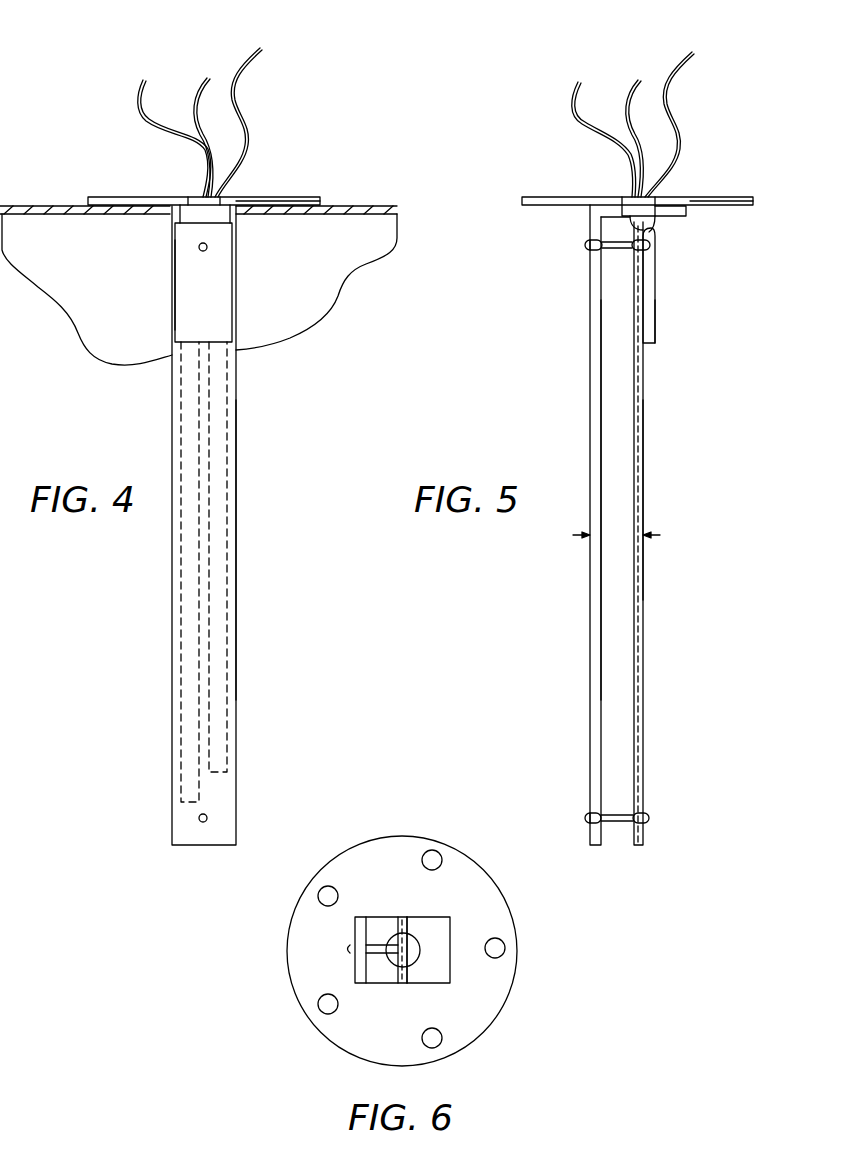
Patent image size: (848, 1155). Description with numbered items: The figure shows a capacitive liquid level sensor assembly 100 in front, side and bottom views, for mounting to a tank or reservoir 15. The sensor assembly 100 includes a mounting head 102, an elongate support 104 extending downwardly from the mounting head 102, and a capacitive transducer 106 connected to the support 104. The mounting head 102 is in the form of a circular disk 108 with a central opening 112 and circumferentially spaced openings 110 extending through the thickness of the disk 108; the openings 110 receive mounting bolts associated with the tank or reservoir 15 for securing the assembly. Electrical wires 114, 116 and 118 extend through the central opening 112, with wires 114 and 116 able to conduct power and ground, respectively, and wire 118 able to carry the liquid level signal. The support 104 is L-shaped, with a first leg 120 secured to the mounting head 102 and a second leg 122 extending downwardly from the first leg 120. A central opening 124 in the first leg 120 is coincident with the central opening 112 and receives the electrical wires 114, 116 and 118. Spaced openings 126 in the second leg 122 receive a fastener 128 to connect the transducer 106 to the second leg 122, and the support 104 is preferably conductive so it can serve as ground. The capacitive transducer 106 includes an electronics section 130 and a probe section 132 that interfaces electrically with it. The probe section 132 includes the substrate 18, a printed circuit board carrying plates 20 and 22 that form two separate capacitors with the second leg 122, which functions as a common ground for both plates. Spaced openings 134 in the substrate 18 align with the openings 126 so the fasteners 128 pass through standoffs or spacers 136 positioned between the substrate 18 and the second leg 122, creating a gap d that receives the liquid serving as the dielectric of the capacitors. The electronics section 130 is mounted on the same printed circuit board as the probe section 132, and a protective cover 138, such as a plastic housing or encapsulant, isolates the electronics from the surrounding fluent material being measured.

In FIG. 4, the tank or reservoir 15 is at (347, 206).
In FIG. 4, the substrate 18 is at (237, 524).
In FIG. 5, the substrate 18 is at (644, 490).
In FIG. 4, the plate 20 is at (222, 624).
In FIG. 4, the plate 22 is at (190, 723).
In FIG. 4, the capacitive liquid level sensor assembly 100 is at (312, 170).
In FIG. 5, the capacitive liquid level sensor assembly 100 is at (748, 170).
In FIG. 6, the capacitive liquid level sensor assembly 100 is at (585, 975).
In FIG. 4, the mounting head 102 is at (267, 203).
In FIG. 5, the mounting head 102 is at (694, 198).
In FIG. 5, the elongate support 104 is at (590, 350).
In FIG. 4, the capacitive transducer 106 is at (238, 440).
In FIG. 5, the capacitive transducer 106 is at (645, 436).
In FIG. 4, the circular disk 108 is at (104, 197).
In FIG. 5, the circular disk 108 is at (539, 197).
In FIG. 6, the circular disk 108 is at (348, 1055).
In FIG. 6, the circumferentially spaced openings 110 is at (420, 854).
In FIG. 4, the central opening 112 is at (194, 197).
In FIG. 5, the central opening 112 is at (630, 197).
In FIG. 6, the central opening 112 is at (414, 940).
In FIG. 4, the electrical wire 114 is at (140, 92).
In FIG. 5, the electrical wire 114 is at (575, 92).
In FIG. 4, the electrical wire 116 is at (204, 80).
In FIG. 5, the electrical wire 116 is at (636, 80).
In FIG. 4, the electrical wire 118 is at (260, 52).
In FIG. 5, the electrical wire 118 is at (692, 54).
In FIG. 5, the first leg 120 is at (688, 212).
In FIG. 6, the first leg 120 is at (436, 933).
In FIG. 5, the second leg 122 is at (600, 400).
In FIG. 6, the second leg 122 is at (362, 937).
In FIG. 5, the central opening 124 is at (654, 222).
In FIG. 5, the spaced openings 126 is at (596, 240).
In FIG. 4, the fastener 128 is at (199, 247).
In FIG. 5, the fastener 128 is at (586, 246).
In FIG. 6, the fastener 128 is at (349, 949).
In FIG. 4, the electronics section 130 is at (219, 273).
In FIG. 5, the electronics section 130 is at (648, 317).
In FIG. 6, the probe section 132 is at (414, 970).
In FIG. 5, the spaced openings 134 is at (652, 252).
In FIG. 5, the standoffs or spacers 136 is at (620, 250).
In FIG. 6, the standoffs or spacers 136 is at (378, 945).
In FIG. 4, the protective cover 138 is at (175, 302).
In FIG. 5, the protective cover 138 is at (650, 342).
In FIG. 5, the gap d is at (629, 535).